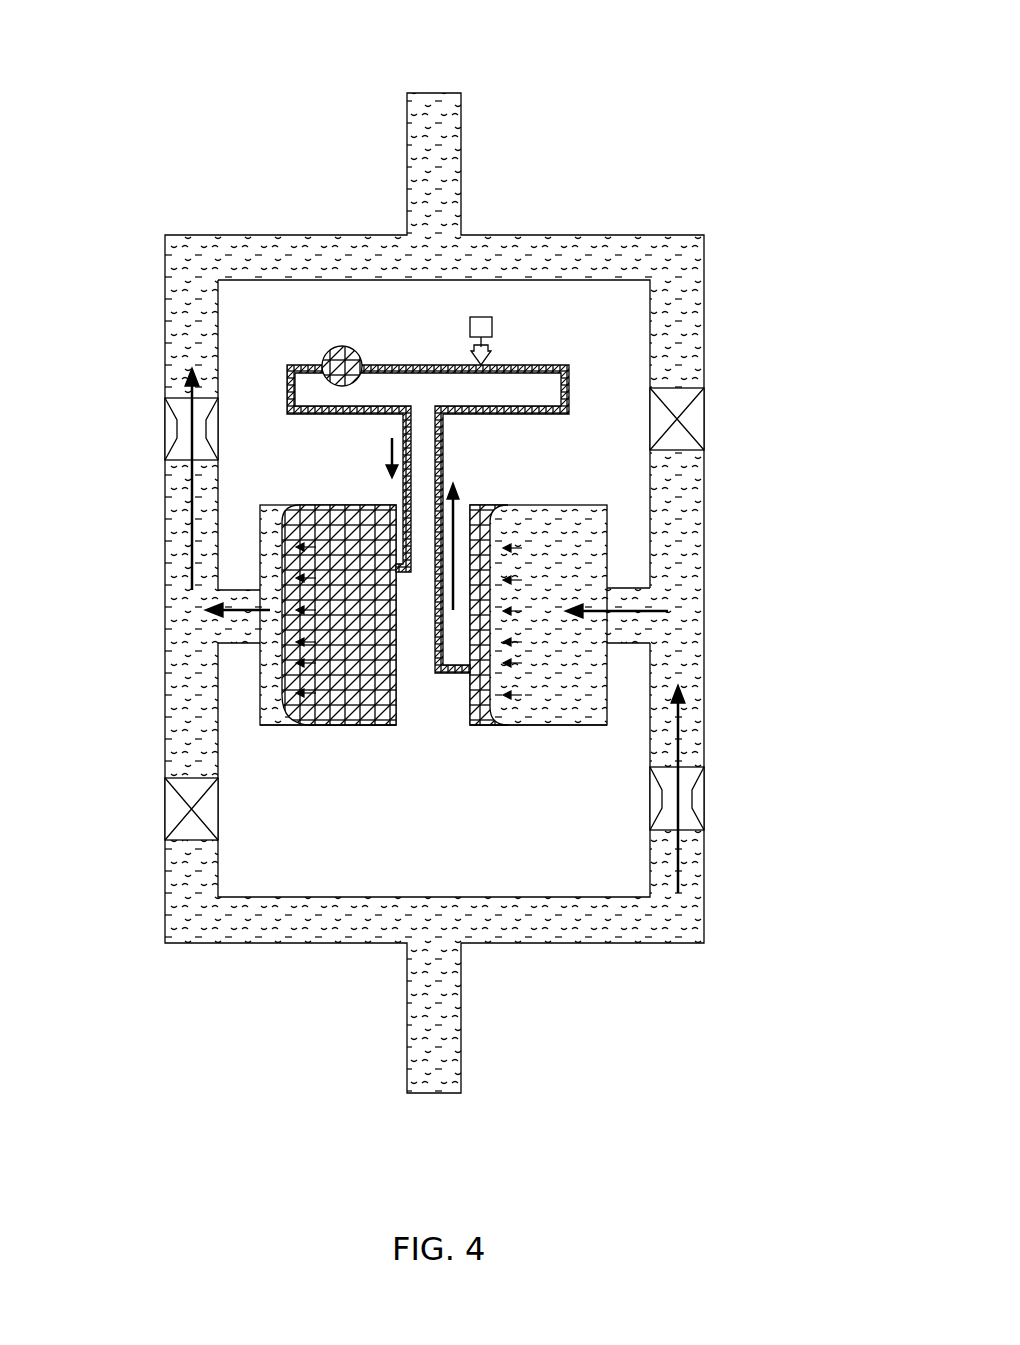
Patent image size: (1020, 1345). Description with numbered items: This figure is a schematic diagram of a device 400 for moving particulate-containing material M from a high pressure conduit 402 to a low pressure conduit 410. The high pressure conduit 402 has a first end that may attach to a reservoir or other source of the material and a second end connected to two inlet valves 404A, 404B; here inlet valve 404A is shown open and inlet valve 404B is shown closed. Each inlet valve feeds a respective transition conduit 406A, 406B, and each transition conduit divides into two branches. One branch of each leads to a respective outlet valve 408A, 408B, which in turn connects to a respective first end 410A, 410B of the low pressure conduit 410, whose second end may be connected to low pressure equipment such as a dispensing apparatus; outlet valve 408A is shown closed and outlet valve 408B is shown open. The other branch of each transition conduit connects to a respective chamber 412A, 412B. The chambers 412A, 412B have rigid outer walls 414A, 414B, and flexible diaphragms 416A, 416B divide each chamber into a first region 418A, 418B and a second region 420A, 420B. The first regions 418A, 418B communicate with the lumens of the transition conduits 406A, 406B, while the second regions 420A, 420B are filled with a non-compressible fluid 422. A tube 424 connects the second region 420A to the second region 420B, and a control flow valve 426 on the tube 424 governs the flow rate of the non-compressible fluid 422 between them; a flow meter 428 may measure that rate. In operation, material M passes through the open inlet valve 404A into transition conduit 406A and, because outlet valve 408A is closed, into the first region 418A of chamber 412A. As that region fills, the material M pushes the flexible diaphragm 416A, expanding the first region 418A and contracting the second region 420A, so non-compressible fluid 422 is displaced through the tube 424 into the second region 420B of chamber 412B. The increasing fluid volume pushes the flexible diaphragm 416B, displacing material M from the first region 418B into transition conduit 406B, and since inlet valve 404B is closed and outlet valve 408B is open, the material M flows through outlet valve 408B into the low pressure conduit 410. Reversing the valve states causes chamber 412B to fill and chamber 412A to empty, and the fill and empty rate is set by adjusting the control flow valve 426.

The device 400 is at (762, 99).
The high pressure conduit 402 is at (462, 1040).
The inlet valve 404A is at (700, 800).
The inlet valve 404B is at (170, 808).
The transition conduit 406A is at (705, 618).
The transition conduit 406B is at (165, 618).
The outlet valve 408A is at (693, 420).
The outlet valve 408B is at (170, 430).
The low pressure conduit 410 is at (462, 152).
The first end of low pressure conduit 410A is at (705, 290).
The first end of low pressure conduit 410B is at (163, 290).
The chamber 412A is at (589, 726).
The chamber 412B is at (328, 726).
The rigid outer wall 414A is at (557, 503).
The rigid outer wall 414B is at (275, 503).
The flexible diaphragm 416A is at (481, 522).
The flexible diaphragm 416B is at (288, 507).
The first region 418A is at (598, 555).
The first region 418B is at (262, 690).
The second region 420A is at (485, 715).
The second region 420B is at (367, 715).
The non-compressible fluid 422 is at (470, 700).
The tube 424 is at (418, 364).
The control flow valve 426 is at (493, 325).
The flow meter 428 is at (335, 347).
The particulate-containing material M is at (593, 257).